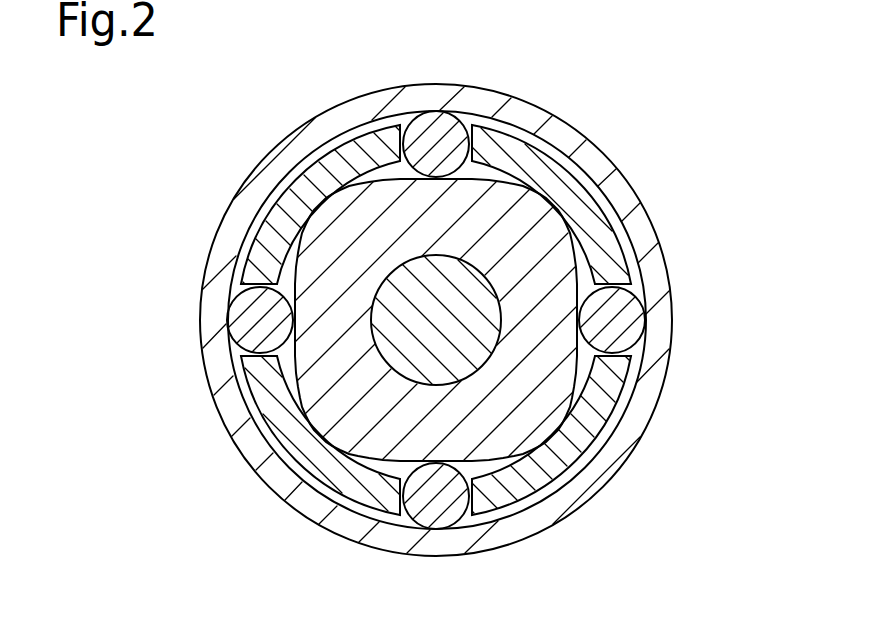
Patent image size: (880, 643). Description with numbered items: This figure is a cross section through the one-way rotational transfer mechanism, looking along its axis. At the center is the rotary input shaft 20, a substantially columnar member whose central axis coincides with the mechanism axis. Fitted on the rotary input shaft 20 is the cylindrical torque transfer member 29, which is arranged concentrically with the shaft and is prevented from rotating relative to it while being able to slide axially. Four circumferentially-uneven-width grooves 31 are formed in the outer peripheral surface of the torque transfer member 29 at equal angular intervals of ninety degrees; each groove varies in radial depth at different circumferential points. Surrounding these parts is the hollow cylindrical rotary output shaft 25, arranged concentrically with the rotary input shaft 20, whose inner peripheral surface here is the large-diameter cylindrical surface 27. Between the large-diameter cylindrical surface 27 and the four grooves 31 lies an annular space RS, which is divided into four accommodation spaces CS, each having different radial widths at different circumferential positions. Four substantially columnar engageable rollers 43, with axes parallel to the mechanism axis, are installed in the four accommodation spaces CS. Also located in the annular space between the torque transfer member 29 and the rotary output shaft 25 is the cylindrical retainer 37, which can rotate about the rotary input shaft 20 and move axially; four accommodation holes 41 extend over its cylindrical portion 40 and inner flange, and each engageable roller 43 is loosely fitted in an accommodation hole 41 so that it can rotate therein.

The rotary input shaft 20 is at (462, 288).
The cylindrical rotary output shaft 25 is at (273, 153).
The large-diameter cylindrical surface 27 is at (607, 432).
The torque transfer member 29 is at (460, 288).
The circumferentially-uneven-width grooves 31 is at (262, 426).
The cylindrical retainer 37 is at (414, 285).
The cylindrical portion 40 is at (414, 285).
The accommodation holes 41 is at (242, 350).
The engageable rollers 43 is at (232, 312).
The annular space RS is at (328, 143).
The accommodation space CS is at (240, 372).